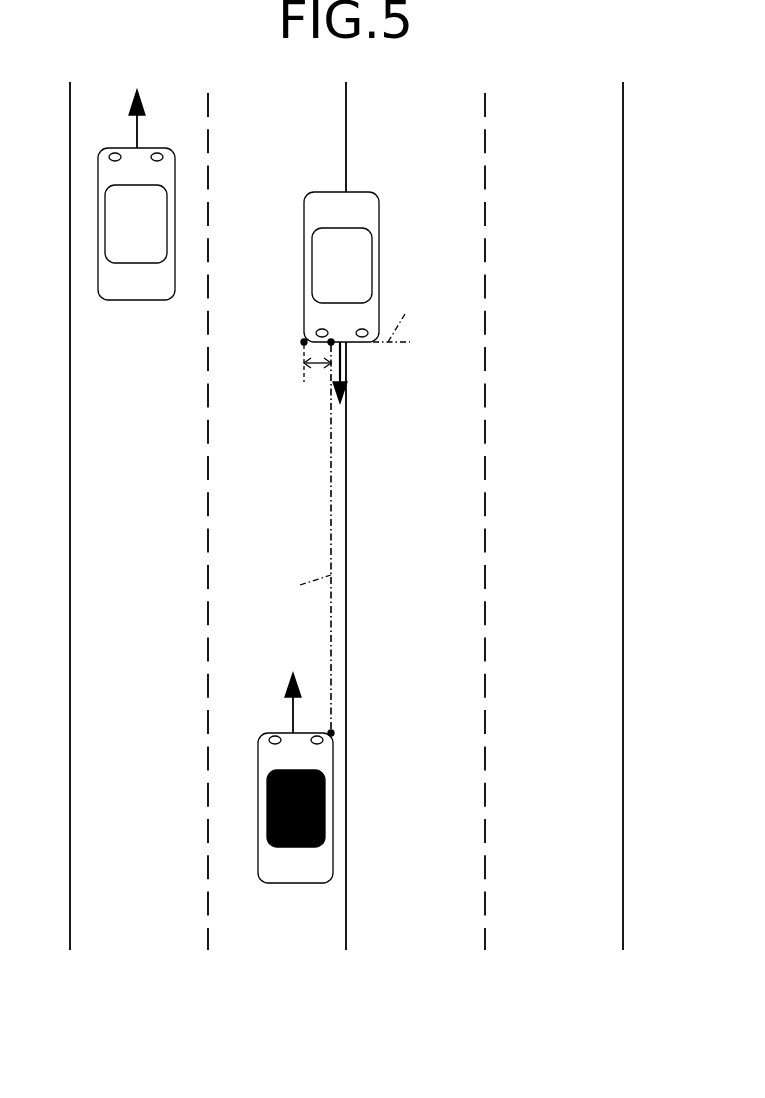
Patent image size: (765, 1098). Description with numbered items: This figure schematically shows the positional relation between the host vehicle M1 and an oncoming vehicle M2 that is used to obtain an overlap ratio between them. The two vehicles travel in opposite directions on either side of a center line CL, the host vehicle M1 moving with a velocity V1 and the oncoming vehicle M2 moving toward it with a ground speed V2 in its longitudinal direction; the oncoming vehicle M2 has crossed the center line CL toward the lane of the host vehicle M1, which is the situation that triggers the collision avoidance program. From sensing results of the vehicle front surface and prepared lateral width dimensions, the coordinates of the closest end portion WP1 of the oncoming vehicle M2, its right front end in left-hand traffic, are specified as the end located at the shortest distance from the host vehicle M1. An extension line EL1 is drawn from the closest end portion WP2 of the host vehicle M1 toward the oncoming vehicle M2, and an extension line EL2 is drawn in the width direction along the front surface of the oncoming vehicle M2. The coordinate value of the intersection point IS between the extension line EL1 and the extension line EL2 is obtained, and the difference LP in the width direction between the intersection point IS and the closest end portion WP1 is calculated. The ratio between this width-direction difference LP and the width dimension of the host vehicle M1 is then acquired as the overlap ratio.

The oncoming vehicle M2 is at (352, 208).
The host vehicle M1 is at (282, 877).
The intersection point IS is at (331, 342).
The closest end portion of the oncoming vehicle WP1 is at (304, 342).
The closest end portion of the host vehicle WP2 is at (331, 733).
The extension line EL1 is at (289, 594).
The extension line EL2 is at (415, 317).
The velocity of host vehicle V1 is at (264, 703).
The ground speed of the oncoming vehicle V2 is at (373, 372).
The difference in the width direction LP is at (320, 365).
The center line CL is at (347, 547).